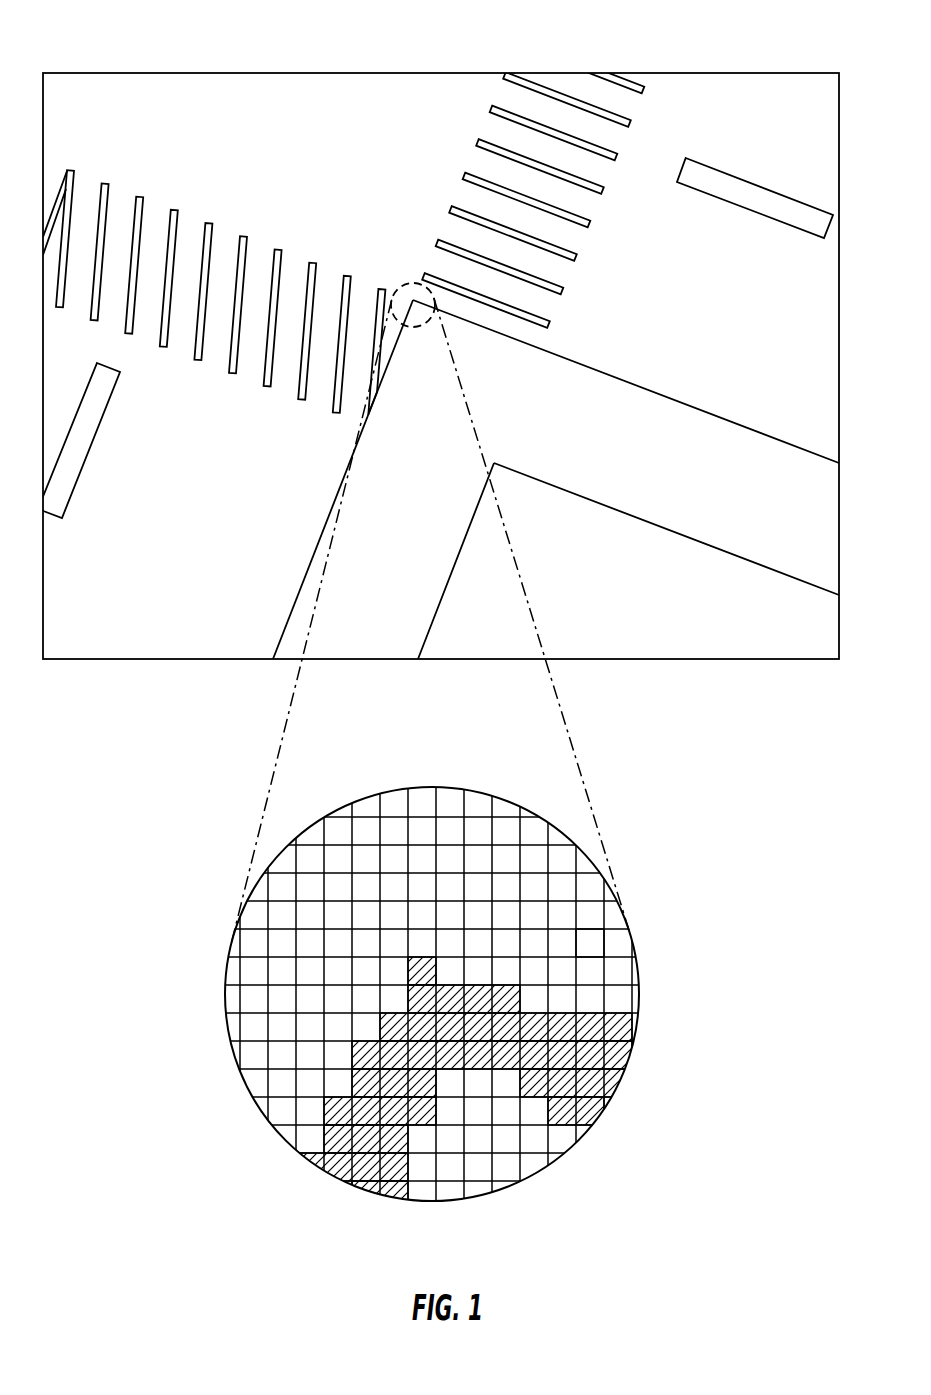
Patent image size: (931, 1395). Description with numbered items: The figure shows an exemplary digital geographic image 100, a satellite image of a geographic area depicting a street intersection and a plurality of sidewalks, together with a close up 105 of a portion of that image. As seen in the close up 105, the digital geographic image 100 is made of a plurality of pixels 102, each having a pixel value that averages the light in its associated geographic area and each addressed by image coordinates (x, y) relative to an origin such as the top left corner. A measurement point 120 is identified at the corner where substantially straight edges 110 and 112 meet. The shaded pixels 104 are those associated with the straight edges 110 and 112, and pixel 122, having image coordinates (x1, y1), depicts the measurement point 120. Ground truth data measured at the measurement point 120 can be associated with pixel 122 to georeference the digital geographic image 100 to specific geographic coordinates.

The digital geographic image 100 is at (739, 73).
The pixel 102 is at (588, 947).
The shaded pixels 104 is at (590, 1083).
The close up 105 is at (277, 853).
The substantially straight edge 110 is at (682, 402).
The substantially straight edge 112 is at (302, 582).
The measurement point 120 is at (413, 300).
The pixel depicting the measurement point 122 is at (417, 972).